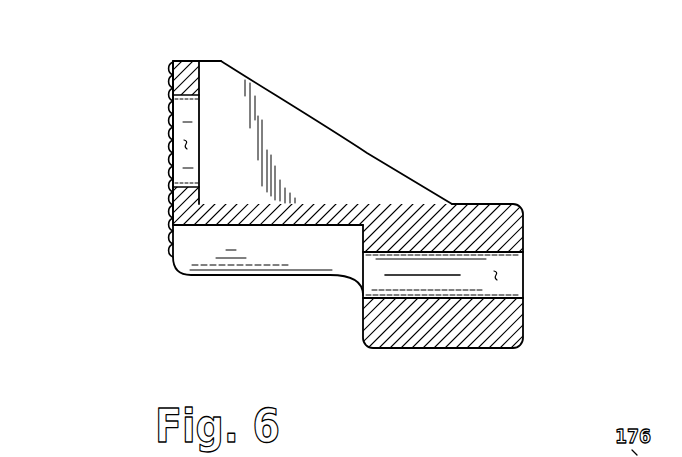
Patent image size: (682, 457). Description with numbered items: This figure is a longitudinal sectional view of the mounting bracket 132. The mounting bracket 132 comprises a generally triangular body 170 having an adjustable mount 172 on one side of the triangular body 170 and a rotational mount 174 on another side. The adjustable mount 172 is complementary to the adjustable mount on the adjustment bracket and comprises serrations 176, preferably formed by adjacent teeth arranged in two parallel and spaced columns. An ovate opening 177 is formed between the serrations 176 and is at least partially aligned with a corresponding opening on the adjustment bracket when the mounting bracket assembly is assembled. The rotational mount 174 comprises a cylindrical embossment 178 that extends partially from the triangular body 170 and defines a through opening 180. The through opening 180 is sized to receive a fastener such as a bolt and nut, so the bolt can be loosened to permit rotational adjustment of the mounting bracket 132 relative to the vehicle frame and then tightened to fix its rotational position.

The mounting bracket 132 is at (458, 129).
The triangular body 170 is at (289, 106).
The adjustable mount 172 is at (171, 225).
The rotational mount 174 is at (526, 328).
The serrations 176 is at (173, 93).
The ovate opening 177 is at (181, 145).
The cylindrical embossment 178 is at (492, 348).
The through opening 180 is at (498, 273).